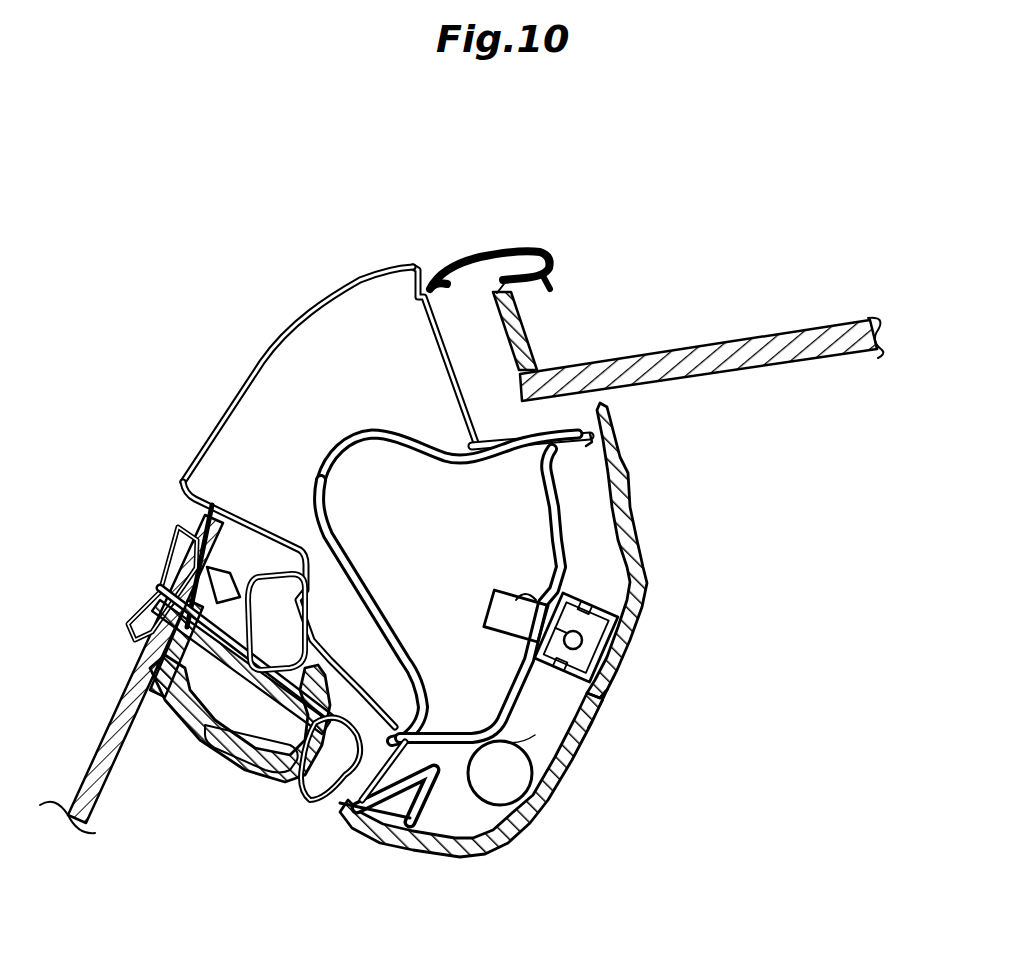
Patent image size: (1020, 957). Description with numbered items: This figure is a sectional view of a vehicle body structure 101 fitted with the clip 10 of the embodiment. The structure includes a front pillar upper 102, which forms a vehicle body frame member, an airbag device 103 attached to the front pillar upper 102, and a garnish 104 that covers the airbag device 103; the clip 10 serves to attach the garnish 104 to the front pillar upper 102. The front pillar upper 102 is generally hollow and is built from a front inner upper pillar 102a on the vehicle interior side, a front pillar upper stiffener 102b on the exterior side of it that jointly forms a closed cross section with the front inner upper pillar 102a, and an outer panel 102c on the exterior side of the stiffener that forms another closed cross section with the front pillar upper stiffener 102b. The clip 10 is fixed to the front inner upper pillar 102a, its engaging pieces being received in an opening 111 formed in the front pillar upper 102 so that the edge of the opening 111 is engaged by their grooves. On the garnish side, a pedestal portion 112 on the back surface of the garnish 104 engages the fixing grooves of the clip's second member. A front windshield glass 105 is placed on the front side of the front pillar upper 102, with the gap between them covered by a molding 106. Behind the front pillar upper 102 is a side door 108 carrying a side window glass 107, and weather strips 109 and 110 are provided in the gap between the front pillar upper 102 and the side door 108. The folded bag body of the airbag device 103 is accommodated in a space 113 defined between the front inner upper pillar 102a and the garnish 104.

The clip 10 is at (582, 588).
The vehicle body structure 101 is at (488, 238).
The front pillar upper 102 is at (327, 282).
The front inner upper pillar 102a is at (562, 486).
The front pillar upper stiffener 102b is at (341, 444).
The outer panel 102c is at (285, 345).
The airbag device 103 is at (514, 785).
The garnish 104 is at (638, 466).
The front windshield glass 105 is at (718, 348).
The molding 106 is at (527, 332).
The side window glass 107 is at (120, 702).
The side door 108 is at (222, 764).
The weather strip 109 is at (200, 517).
The weather strip 110 is at (303, 800).
The opening 111 is at (525, 597).
The pedestal portion 112 is at (598, 712).
The space 113 is at (532, 735).